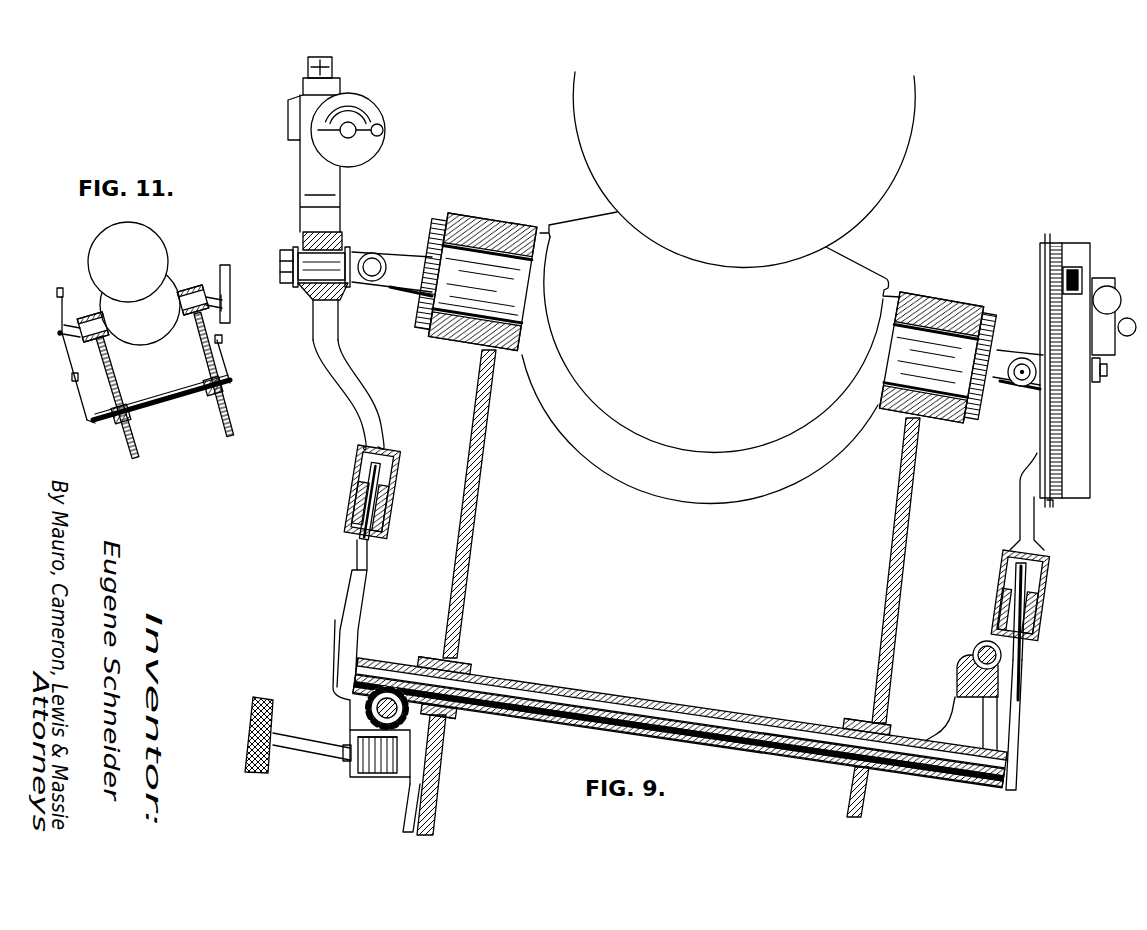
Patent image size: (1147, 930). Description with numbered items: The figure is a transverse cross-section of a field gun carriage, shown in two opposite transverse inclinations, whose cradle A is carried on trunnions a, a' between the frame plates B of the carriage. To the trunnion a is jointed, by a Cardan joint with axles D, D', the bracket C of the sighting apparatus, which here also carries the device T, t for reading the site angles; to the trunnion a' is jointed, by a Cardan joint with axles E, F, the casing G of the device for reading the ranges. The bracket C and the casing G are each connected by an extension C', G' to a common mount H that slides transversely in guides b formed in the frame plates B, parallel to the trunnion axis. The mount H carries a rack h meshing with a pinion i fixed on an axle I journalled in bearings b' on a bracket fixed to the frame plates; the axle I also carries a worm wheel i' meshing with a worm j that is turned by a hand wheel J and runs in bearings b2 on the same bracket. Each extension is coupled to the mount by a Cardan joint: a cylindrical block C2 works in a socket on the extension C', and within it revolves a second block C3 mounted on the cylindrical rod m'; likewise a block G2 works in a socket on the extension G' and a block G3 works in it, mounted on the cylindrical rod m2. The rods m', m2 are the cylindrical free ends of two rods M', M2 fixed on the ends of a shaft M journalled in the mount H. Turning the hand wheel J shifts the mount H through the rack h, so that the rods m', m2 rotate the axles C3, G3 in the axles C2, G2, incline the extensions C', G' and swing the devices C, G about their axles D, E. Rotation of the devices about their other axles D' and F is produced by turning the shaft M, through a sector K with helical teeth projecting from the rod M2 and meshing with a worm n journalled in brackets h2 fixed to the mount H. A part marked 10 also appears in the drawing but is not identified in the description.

In FIG. 9, the gun carriage cradle A is at (697, 483).
In FIG. 9, the trunnion a is at (475, 267).
In FIG. 11, the trunnion a is at (83, 313).
In FIG. 9, the trunnion a' is at (939, 345).
In FIG. 11, the trunnion a' is at (199, 282).
In FIG. 9, the frame plates B is at (462, 576).
In FIG. 11, the frame plates B is at (233, 415).
In FIG. 9, the guides b is at (655, 675).
In FIG. 9, the bearings b' is at (446, 775).
In FIG. 9, the bearings b2 is at (420, 792).
In FIG. 9, the bracket of the sighting apparatus C is at (320, 253).
In FIG. 11, the bracket of the sighting apparatus C is at (42, 310).
In FIG. 11, the extension C' is at (57, 376).
In FIG. 9, the cylindrical block C2 is at (356, 522).
In FIG. 9, the cylindrical block C3 is at (397, 500).
In FIG. 9, the Cardan joint axle D is at (392, 258).
In FIG. 9, the Cardan joint axle D' is at (306, 278).
In FIG. 9, the Cardan joint axle E is at (1020, 380).
In FIG. 9, the Cardan joint axle F is at (1104, 382).
In FIG. 9, the device for reading the ranges G is at (1082, 370).
In FIG. 11, the device for reading the ranges G is at (238, 285).
In FIG. 9, the extension G' is at (1008, 501).
In FIG. 11, the extension G' is at (239, 340).
In FIG. 9, the cylindrical block G2 is at (1052, 605).
In FIG. 9, the cylindrical block G3 is at (1005, 612).
In FIG. 9, the mount H is at (635, 701).
In FIG. 11, the mount H is at (176, 397).
In FIG. 9, the rack h is at (466, 713).
In FIG. 9, the brackets h2 is at (962, 710).
In FIG. 9, the axle I is at (407, 718).
In FIG. 9, the pinion i is at (361, 706).
In FIG. 9, the worm wheel i' is at (360, 727).
In FIG. 9, the hand wheel J is at (258, 772).
In FIG. 9, the worm j is at (383, 828).
In FIG. 9, the sector K is at (957, 680).
In FIG. 9, the shaft M is at (679, 729).
In FIG. 11, the shaft M is at (161, 398).
In FIG. 9, the rod M' is at (339, 613).
In FIG. 11, the rod M' is at (66, 412).
In FIG. 9, the rod M2 is at (1030, 650).
In FIG. 11, the rod M2 is at (230, 360).
In FIG. 9, the cylindrical rod m' is at (405, 495).
In FIG. 9, the cylindrical rod m2 is at (1034, 574).
In FIG. 9, the worm n is at (977, 648).
In FIG. 9, the device for reading the site angles T is at (1123, 300).
In FIG. 9, the device for reading the site angles t is at (1128, 338).
In FIG. 9, the rod 10 is at (1024, 690).